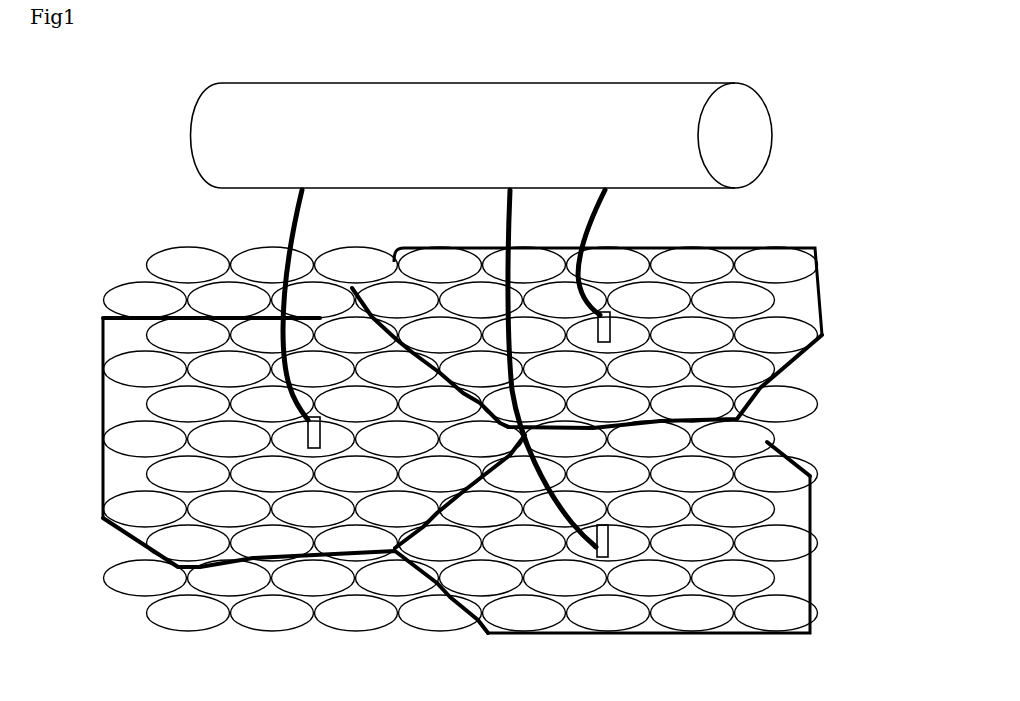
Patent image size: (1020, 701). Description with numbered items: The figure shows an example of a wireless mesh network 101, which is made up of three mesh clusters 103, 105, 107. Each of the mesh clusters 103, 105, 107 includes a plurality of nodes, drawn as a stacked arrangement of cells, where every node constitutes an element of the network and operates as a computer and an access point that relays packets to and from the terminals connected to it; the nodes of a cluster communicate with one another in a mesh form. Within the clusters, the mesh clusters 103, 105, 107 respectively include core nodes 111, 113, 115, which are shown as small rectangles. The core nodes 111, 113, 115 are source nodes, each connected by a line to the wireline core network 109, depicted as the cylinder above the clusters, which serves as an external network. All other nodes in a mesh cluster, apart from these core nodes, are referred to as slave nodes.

The wireless mesh network 101 is at (852, 190).
The mesh cluster 103 is at (103, 318).
The mesh cluster 105 is at (722, 250).
The mesh cluster 107 is at (731, 636).
The wireline core network 109 is at (482, 135).
The core node 111 is at (338, 428).
The core node 113 is at (612, 318).
The core node 115 is at (597, 560).